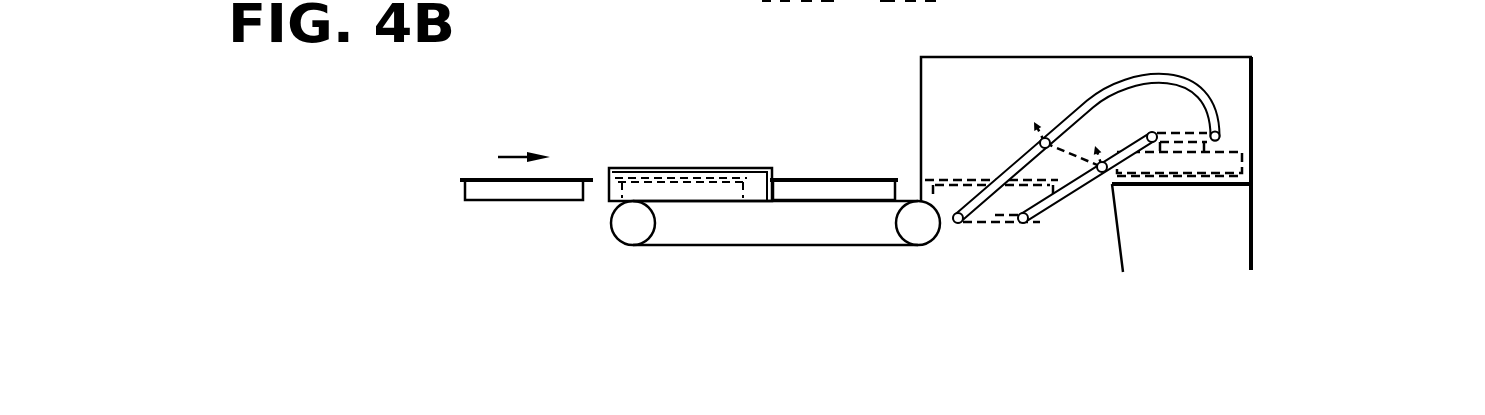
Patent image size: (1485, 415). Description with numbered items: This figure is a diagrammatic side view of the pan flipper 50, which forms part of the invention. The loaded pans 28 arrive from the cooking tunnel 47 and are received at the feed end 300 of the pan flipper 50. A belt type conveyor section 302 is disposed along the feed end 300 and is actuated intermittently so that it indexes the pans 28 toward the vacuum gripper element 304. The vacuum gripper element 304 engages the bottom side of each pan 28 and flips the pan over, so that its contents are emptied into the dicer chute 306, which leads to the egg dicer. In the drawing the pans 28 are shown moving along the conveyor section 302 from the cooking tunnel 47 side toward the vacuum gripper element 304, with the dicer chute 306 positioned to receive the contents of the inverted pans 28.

The loaded pans 28 is at (478, 187).
The cooking tunnel 47 is at (433, 131).
The pan flipper 50 is at (791, 112).
The feed end 300 is at (668, 150).
The belt type conveyor section 302 is at (753, 227).
The vacuum gripper element 304 is at (988, 219).
The dicer chute 306 is at (1182, 236).